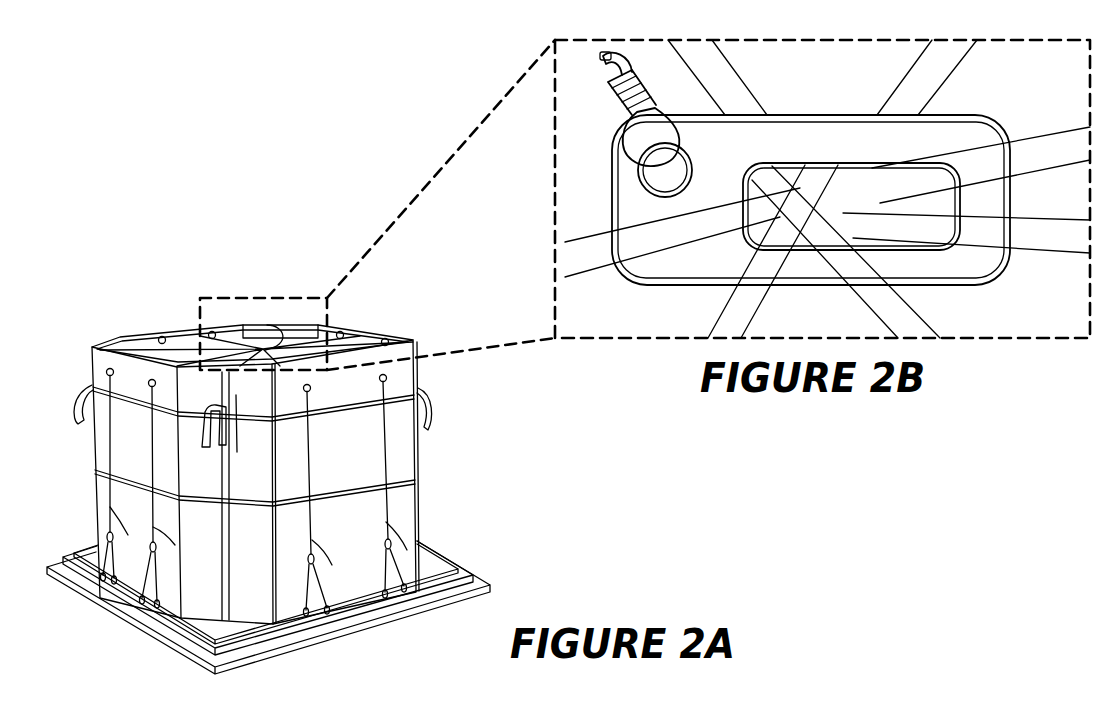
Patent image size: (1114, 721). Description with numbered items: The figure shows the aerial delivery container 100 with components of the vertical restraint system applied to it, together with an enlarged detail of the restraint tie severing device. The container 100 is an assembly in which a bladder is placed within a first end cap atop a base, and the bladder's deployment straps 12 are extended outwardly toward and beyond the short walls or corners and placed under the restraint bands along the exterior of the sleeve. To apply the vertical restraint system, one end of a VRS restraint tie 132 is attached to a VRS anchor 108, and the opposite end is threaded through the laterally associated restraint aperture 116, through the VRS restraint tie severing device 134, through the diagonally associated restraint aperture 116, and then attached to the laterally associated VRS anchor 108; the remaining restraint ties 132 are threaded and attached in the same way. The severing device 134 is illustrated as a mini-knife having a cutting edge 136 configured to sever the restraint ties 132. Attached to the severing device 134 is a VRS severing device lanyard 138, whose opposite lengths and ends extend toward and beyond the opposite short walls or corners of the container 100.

In FIG. 2A, the deployment straps 12 is at (223, 518).
In FIG. 2A, the aerial delivery container 100 is at (462, 428).
In FIG. 2A, the VRS anchor 108 is at (395, 590).
In FIG. 2A, the restraint apertures 116 is at (311, 388).
In FIG. 2A, the VRS restraint tie 132 is at (312, 428).
In FIG. 2B, the VRS restraint tie 132 is at (937, 88).
In FIG. 2A, the VRS restraint tie severing device 134 is at (245, 314).
In FIG. 2B, the VRS restraint tie severing device 134 is at (790, 114).
In FIG. 2B, the cutting edge 136 is at (917, 250).
In FIG. 2A, the VRS severing device lanyard 138 is at (278, 318).
In FIG. 2B, the VRS severing device lanyard 138 is at (582, 44).